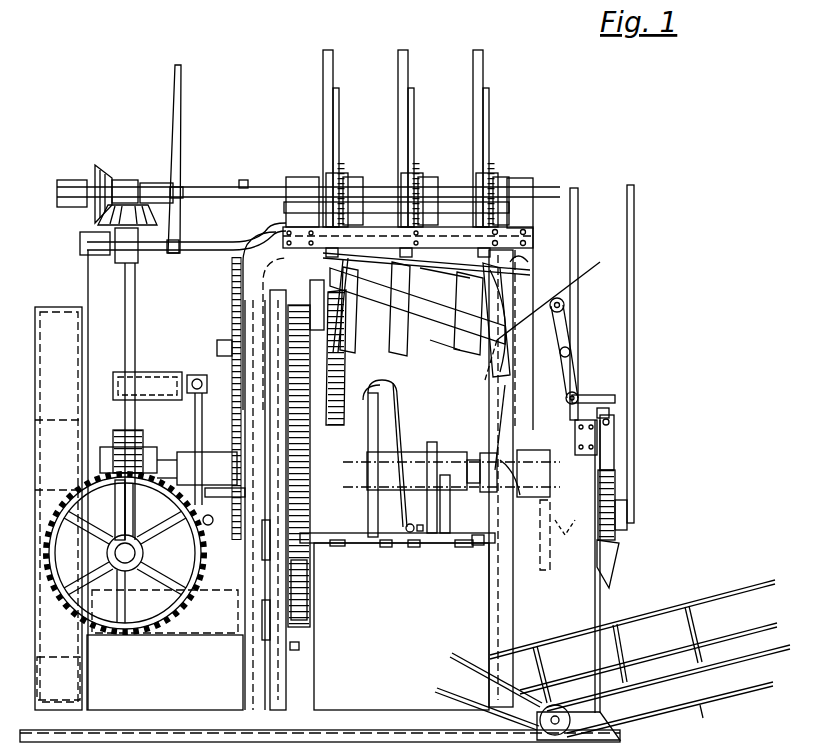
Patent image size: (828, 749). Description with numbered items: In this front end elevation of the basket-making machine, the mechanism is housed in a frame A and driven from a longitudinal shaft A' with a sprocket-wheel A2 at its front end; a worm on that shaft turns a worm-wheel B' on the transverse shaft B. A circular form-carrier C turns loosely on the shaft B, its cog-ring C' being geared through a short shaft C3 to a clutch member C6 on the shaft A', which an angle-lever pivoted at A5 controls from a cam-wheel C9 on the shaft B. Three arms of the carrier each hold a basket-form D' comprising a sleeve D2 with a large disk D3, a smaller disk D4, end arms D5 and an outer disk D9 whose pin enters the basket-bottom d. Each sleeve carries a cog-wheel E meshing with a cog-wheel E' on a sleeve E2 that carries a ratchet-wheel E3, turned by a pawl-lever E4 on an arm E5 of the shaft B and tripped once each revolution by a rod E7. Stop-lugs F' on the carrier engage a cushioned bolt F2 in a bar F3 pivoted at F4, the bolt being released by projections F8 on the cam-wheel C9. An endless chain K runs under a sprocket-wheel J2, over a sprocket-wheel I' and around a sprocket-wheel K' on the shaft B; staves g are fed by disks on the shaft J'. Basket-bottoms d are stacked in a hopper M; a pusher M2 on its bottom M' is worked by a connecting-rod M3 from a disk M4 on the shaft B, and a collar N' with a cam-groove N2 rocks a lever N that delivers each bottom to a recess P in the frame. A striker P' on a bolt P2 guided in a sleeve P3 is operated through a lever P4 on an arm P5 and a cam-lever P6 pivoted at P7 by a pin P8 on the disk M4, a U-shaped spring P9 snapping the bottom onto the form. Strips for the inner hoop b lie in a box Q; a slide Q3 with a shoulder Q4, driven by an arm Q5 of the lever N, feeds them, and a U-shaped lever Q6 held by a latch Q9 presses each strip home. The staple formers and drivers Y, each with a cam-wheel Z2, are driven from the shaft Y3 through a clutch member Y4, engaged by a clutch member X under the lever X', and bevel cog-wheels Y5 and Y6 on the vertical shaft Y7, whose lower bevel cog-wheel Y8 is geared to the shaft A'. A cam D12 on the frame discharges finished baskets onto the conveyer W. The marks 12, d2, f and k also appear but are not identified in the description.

The main frame A is at (72, 471).
The gear wheel A' is at (125, 553).
The frame base A2 is at (165, 650).
The bracket A5 is at (147, 377).
The gear B is at (168, 465).
The pinion B' is at (134, 444).
The gear wheel C is at (315, 466).
The pinion C' is at (314, 590).
The shaft C3 is at (225, 500).
The bearing C6 is at (207, 380).
The rod C9 is at (202, 436).
The cam shaft D' is at (417, 310).
The cam D2 is at (445, 352).
The gear D3 is at (348, 360).
The cam D4 is at (411, 298).
The cam D5 is at (486, 326).
The cam D9 is at (468, 316).
The frame bar D12 is at (259, 505).
The rod d is at (501, 427).
The rod d2 is at (535, 535).
The gear E is at (297, 305).
The bearing E' is at (345, 556).
The shaft E2 is at (408, 453).
The lever E3 is at (437, 445).
The arm E4 is at (440, 510).
The collar E5 is at (450, 512).
The bearing E7 is at (456, 556).
The upright F' is at (278, 500).
The bracket F2 is at (276, 540).
The bracket F3 is at (258, 614).
The pin F4 is at (300, 646).
The pin F8 is at (214, 512).
The bolt I' is at (251, 169).
The bar 12 is at (382, 203).
The bearing J' is at (217, 345).
The frame rod J2 is at (232, 285).
The chain K is at (224, 397).
The chain guide K' is at (240, 505).
The post M is at (619, 449).
The gear M' is at (634, 505).
The bracket M2 is at (567, 538).
The plate M3 is at (623, 564).
The bracket M4 is at (615, 445).
The column N is at (501, 478).
The block N' is at (527, 462).
The block N2 is at (484, 458).
The pawl P is at (340, 305).
The rod P' is at (542, 308).
The link P2 is at (553, 329).
The pivot P3 is at (540, 292).
The link P4 is at (566, 328).
The pivot P5 is at (565, 393).
The bar P6 is at (596, 385).
The bracket P7 is at (576, 437).
The pin P8 is at (610, 415).
The bracket P9 is at (517, 268).
The lever Q is at (380, 418).
The bearing Q3 is at (414, 547).
The bearing Q4 is at (386, 547).
The bearing Q5 is at (478, 545).
The loop Q6 is at (384, 383).
The foot Q9 is at (352, 528).
The conveyor W is at (612, 660).
The collar X is at (156, 180).
The lever X' is at (185, 159).
The post Y is at (416, 138).
The shaft Y3 is at (308, 182).
The hub Y4 is at (125, 181).
The bevel gear Y5 is at (104, 168).
The bevel gear Y6 is at (131, 224).
The vertical shaft Y7 is at (133, 310).
The shaft Y8 is at (139, 510).
The carriage beam Z2 is at (355, 190).
The bar b is at (426, 270).
The clip f is at (332, 254).
The clip k is at (455, 255).
The rod g is at (445, 275).